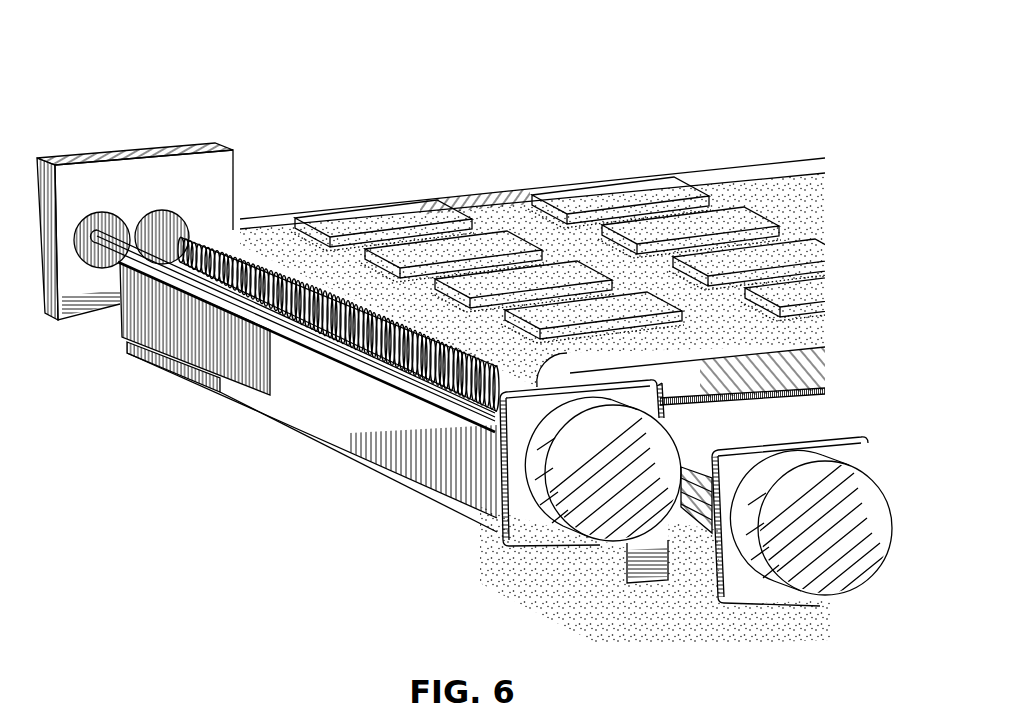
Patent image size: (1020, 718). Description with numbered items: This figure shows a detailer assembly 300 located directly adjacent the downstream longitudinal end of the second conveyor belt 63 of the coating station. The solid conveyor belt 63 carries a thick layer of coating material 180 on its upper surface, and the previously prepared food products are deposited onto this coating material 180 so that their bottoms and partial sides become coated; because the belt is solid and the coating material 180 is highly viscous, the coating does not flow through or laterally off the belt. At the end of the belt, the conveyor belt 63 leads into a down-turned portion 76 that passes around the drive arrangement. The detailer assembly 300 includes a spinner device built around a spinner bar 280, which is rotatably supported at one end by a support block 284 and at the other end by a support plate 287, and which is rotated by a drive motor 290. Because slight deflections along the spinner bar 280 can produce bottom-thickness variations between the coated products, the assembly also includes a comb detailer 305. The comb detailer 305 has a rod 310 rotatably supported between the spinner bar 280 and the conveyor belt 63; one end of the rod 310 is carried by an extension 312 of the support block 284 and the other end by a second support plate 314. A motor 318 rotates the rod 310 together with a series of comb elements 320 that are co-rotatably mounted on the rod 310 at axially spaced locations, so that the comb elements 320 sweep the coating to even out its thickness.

The detailer assembly 300 is at (65, 104).
The comb detailer 305 is at (152, 128).
The support block 284 is at (184, 207).
The rod 310 is at (164, 233).
The extension 312 is at (230, 180).
The comb elements 320 is at (243, 240).
The second conveyor belt 63 is at (490, 195).
The coating material 180 is at (591, 248).
The spinner bar 280 is at (283, 318).
The support plate 287 is at (508, 530).
The drive motor 290 is at (613, 541).
The down-turned portion 76 is at (700, 470).
The support plate 314 is at (845, 447).
The motor 318 is at (813, 578).